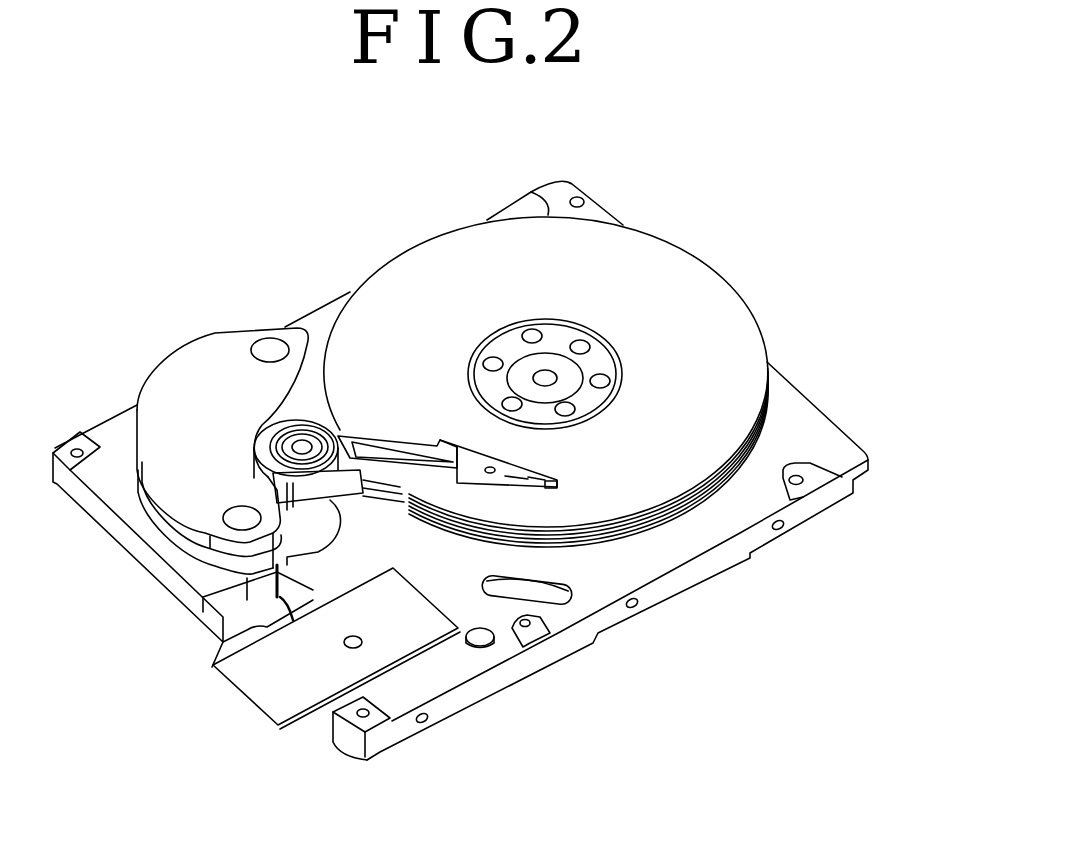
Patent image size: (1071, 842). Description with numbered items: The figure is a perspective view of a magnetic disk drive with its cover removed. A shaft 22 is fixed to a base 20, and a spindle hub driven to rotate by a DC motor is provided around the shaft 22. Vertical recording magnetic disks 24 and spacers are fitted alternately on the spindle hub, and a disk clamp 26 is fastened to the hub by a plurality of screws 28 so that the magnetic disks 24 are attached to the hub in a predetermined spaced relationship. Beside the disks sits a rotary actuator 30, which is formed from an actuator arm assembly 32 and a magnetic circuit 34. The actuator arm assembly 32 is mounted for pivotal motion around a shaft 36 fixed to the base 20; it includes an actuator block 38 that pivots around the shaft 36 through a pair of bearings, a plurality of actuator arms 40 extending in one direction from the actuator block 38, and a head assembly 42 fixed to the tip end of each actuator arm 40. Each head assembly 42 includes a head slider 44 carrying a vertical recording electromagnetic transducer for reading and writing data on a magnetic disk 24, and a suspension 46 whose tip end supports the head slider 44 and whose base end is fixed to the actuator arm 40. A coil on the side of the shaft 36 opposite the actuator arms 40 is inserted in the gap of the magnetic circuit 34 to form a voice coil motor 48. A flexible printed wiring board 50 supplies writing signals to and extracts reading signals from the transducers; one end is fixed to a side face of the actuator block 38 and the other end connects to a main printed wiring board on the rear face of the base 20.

The base 20 is at (613, 578).
The shaft 22 is at (546, 355).
The magnetic disks 24 is at (449, 232).
The disk clamp 26 is at (512, 340).
The screws 28 is at (485, 362).
The rotary actuator 30 is at (347, 417).
The actuator arm assembly 32 is at (375, 437).
The magnetic circuit 34 is at (170, 508).
The shaft 36 is at (292, 450).
The actuator block 38 is at (340, 470).
The actuator arms 40 is at (404, 440).
The head assembly 42 is at (542, 473).
The head slider 44 is at (560, 486).
The suspension 46 is at (511, 477).
The voice coil motor 48 is at (186, 353).
The flexible printed wiring board 50 is at (287, 580).